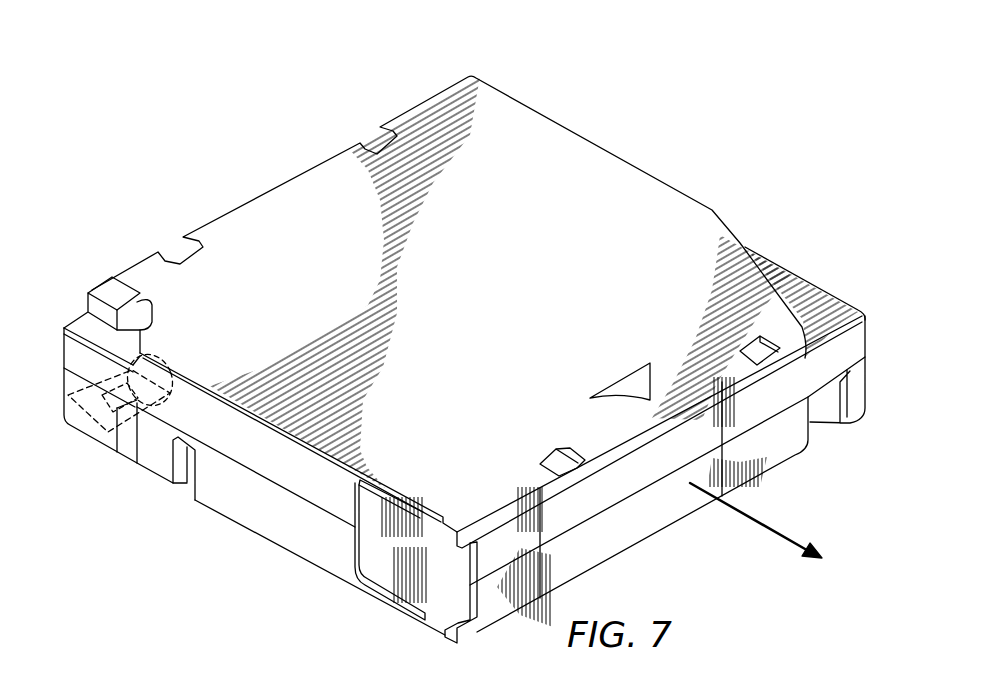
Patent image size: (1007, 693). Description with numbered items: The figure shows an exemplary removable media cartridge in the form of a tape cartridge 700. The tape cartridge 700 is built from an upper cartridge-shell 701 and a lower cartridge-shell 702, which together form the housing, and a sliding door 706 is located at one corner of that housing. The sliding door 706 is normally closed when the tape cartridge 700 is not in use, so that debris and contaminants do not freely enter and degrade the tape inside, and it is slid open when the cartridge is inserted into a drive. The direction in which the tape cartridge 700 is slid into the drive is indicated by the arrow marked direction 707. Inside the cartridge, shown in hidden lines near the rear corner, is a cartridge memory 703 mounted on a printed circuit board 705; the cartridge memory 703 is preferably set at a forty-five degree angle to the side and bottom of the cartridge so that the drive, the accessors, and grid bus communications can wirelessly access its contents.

The tape cartridge 700 is at (686, 135).
The upper cartridge-shell 701 is at (270, 187).
The lower cartridge-shell 702 is at (250, 515).
The cartridge memory 703 is at (152, 367).
The printed circuit board 705 is at (73, 428).
The sliding door 706 is at (383, 580).
The direction 707 is at (787, 532).